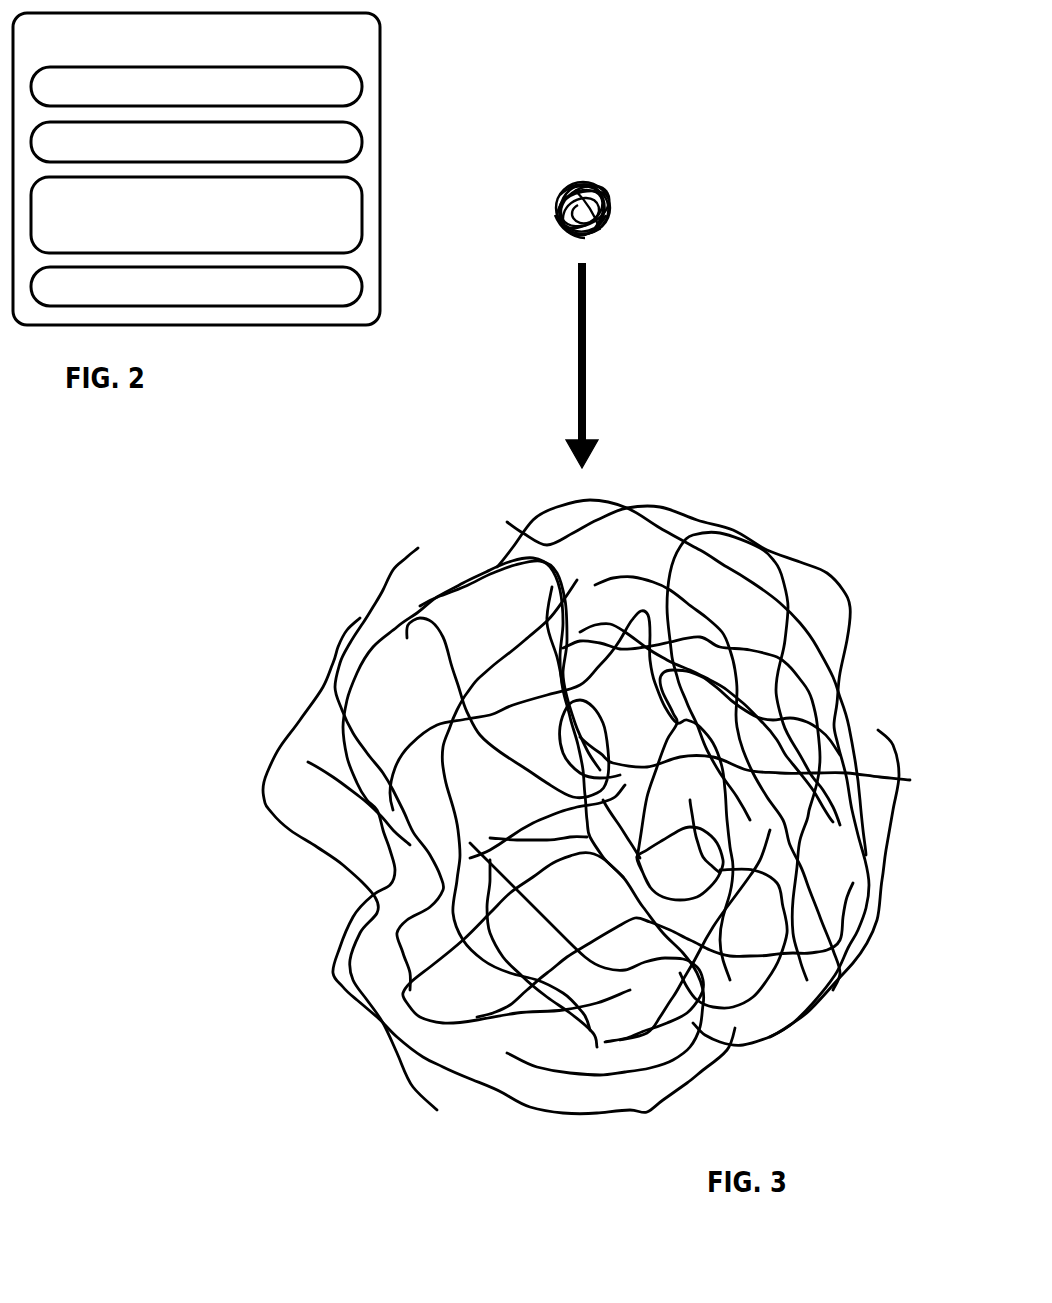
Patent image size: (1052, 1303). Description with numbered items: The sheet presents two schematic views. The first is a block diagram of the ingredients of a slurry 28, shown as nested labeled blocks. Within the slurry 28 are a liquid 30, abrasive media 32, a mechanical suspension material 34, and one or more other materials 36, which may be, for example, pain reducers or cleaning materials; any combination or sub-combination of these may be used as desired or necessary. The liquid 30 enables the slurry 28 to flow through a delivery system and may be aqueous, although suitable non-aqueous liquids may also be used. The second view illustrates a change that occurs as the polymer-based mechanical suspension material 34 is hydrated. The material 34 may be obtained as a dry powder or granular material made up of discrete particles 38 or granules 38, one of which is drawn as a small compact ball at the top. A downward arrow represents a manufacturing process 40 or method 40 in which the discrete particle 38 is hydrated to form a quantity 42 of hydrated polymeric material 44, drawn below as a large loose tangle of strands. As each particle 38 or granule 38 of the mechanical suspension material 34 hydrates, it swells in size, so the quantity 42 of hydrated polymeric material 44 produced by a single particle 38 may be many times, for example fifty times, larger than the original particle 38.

In FIG. 2, the slurry 28 is at (196, 169).
In FIG. 2, the liquid 30 is at (196, 86).
In FIG. 2, the abrasive media 32 is at (196, 142).
In FIG. 2, the mechanical suspension material 34 is at (196, 215).
In FIG. 3, the mechanical suspension material 34 is at (590, 621).
In FIG. 2, the other material(s) 36 is at (196, 286).
In FIG. 3, the discrete particle 38 is at (630, 164).
In FIG. 3, the manufacturing process 40 is at (586, 355).
In FIG. 3, the quantity of hydrated polymeric material 42 is at (596, 621).
In FIG. 3, the hydrated polymeric material 44 is at (596, 621).